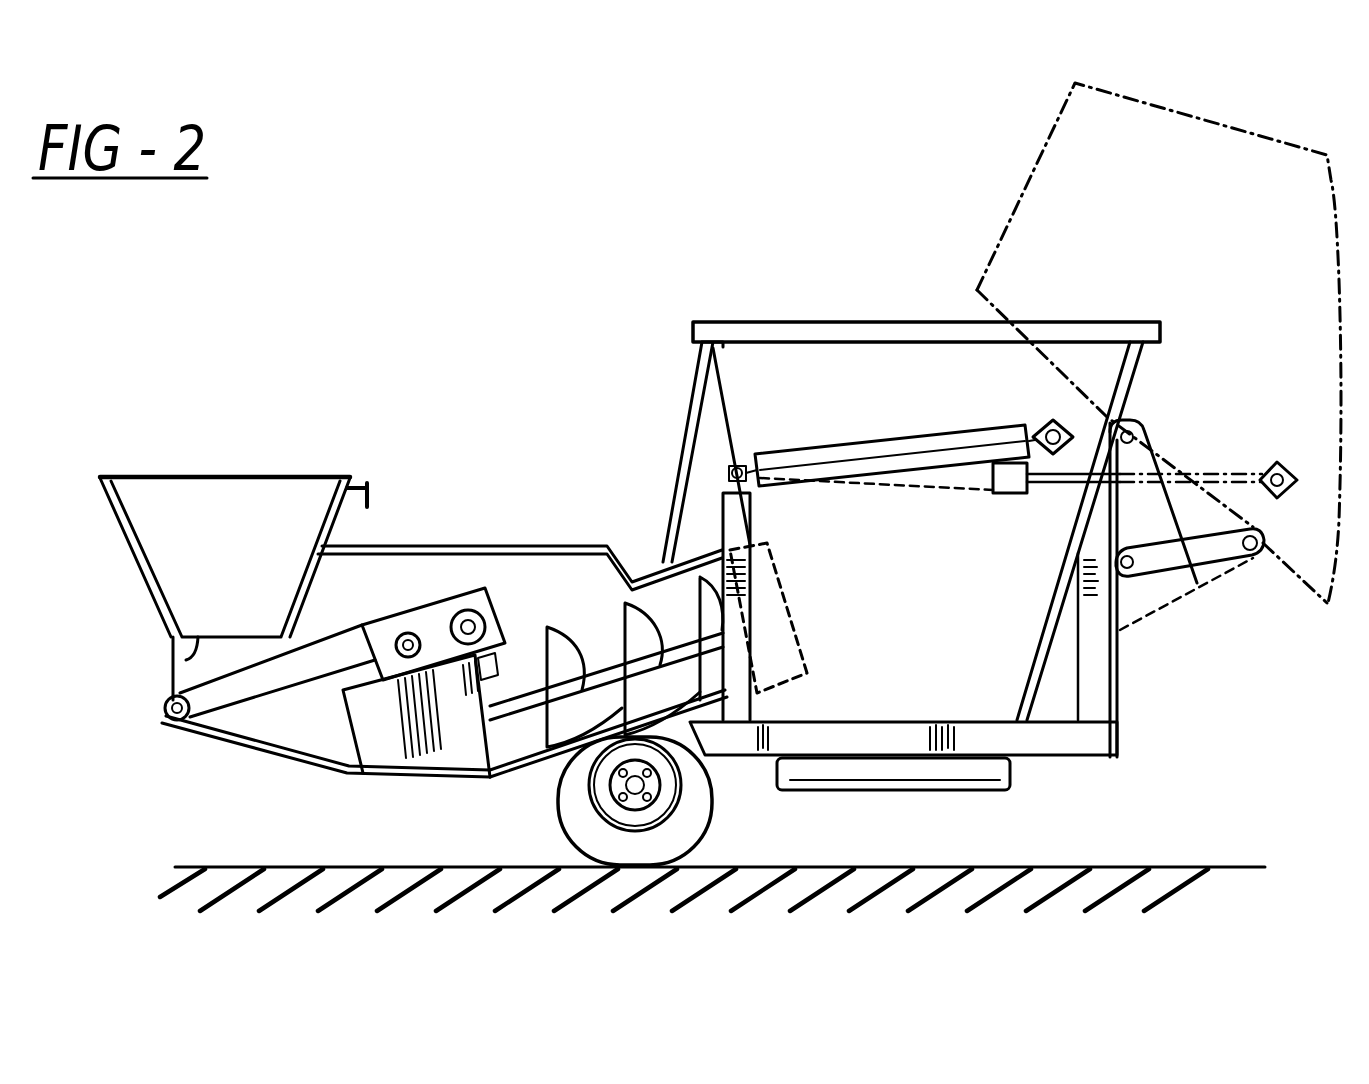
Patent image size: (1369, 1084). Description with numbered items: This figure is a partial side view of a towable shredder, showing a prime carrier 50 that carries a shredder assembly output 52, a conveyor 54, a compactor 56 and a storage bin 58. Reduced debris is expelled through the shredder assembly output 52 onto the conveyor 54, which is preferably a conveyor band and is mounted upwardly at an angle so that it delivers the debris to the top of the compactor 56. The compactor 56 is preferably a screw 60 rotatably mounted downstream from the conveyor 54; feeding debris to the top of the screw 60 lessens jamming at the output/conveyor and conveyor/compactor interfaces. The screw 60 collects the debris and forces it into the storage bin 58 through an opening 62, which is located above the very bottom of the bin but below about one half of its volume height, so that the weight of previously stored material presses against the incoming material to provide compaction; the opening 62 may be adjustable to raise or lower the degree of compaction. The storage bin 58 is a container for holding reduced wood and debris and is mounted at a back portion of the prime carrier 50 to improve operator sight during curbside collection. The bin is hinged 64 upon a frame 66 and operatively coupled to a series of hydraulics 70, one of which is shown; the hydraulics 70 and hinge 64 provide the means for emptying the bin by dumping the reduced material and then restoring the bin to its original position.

The prime carrier 50 is at (493, 420).
The shredder assembly output 52 is at (170, 667).
The conveyor 54 is at (273, 692).
The compactor 56 is at (524, 777).
The storage bin 58 is at (807, 367).
The screw 60 is at (540, 620).
The opening 62 is at (780, 587).
The hinge 64 is at (1157, 572).
The frame 66 is at (1103, 735).
The hydraulics 70 is at (928, 440).